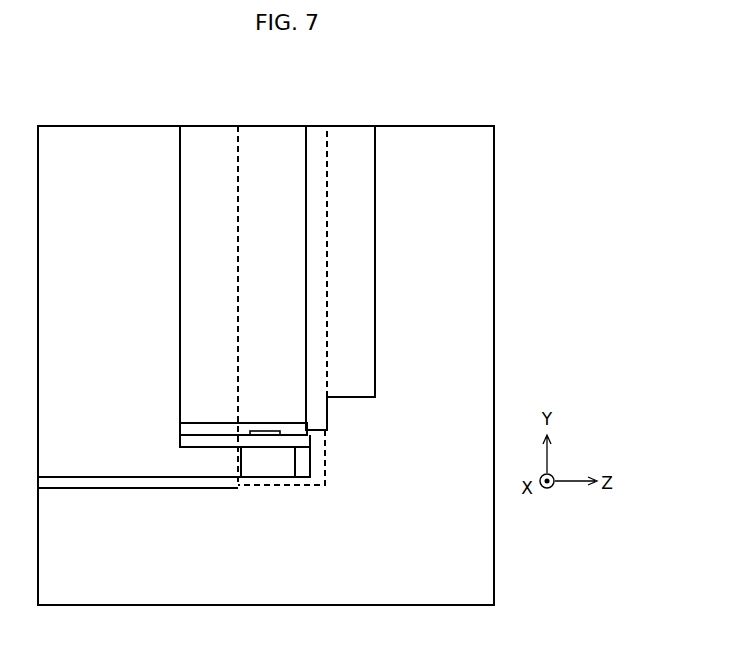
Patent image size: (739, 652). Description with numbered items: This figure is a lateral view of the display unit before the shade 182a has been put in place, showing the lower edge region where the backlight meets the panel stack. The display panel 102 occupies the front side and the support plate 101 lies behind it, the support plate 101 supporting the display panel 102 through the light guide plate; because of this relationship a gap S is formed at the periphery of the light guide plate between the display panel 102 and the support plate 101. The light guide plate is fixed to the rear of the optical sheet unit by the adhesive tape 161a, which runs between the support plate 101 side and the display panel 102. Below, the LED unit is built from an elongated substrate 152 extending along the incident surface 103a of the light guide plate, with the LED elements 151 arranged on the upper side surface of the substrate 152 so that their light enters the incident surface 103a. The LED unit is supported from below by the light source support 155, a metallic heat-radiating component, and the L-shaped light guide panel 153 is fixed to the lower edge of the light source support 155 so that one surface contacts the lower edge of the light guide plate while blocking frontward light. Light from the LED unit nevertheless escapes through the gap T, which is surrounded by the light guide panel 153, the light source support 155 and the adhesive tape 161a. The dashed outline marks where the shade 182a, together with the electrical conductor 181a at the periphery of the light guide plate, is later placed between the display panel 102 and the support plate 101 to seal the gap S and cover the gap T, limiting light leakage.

The light source support 155 is at (108, 157).
The support plate 101 is at (197, 158).
The gap S is at (240, 157).
The adhesive tape 161a is at (317, 157).
The display panel 102 is at (368, 157).
The substrate 152 is at (205, 440).
The LED elements 151 is at (267, 430).
The incident surface 103a is at (284, 433).
The gap T is at (295, 451).
The light guide panel 153 is at (122, 479).
The shade 182a is at (251, 483).
The electrical conductor 181a is at (238, 470).